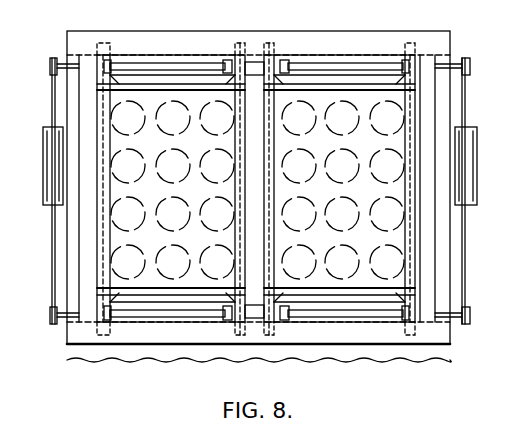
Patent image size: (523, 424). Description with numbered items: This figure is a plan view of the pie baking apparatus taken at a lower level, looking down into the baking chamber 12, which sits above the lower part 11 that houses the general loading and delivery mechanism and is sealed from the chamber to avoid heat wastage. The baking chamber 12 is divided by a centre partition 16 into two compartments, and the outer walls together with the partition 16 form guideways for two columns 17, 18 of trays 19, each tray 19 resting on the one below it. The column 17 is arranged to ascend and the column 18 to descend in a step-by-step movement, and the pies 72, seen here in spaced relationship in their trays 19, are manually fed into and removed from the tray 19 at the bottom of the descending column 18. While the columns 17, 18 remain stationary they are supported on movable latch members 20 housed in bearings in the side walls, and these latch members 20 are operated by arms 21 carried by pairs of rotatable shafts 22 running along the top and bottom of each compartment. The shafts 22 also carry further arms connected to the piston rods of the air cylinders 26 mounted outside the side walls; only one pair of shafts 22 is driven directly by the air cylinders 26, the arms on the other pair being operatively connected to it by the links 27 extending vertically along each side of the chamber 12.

The lower part 11 is at (447, 353).
The baking chamber 12 is at (452, 99).
The centre partition 16 is at (257, 177).
The column of trays 17 is at (170, 297).
The column of trays 18 is at (344, 296).
The tray 19 is at (187, 281).
The latch member 20 is at (105, 76).
The arm 21 is at (225, 60).
The rotatable shaft 22 is at (140, 63).
The air cylinder 26 is at (60, 147).
The link 27 is at (52, 226).
The pie 72 is at (173, 110).